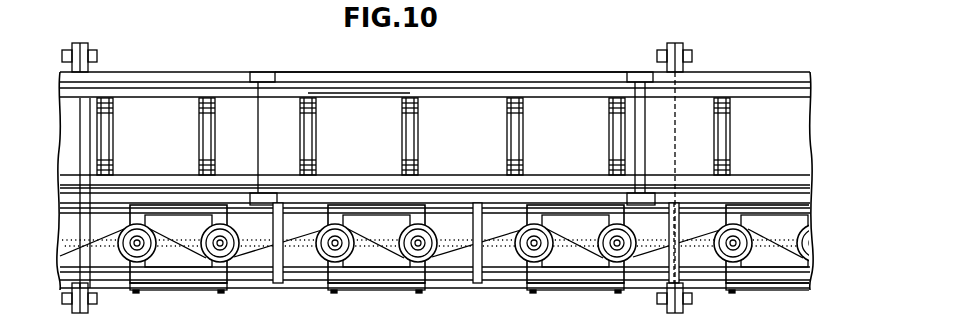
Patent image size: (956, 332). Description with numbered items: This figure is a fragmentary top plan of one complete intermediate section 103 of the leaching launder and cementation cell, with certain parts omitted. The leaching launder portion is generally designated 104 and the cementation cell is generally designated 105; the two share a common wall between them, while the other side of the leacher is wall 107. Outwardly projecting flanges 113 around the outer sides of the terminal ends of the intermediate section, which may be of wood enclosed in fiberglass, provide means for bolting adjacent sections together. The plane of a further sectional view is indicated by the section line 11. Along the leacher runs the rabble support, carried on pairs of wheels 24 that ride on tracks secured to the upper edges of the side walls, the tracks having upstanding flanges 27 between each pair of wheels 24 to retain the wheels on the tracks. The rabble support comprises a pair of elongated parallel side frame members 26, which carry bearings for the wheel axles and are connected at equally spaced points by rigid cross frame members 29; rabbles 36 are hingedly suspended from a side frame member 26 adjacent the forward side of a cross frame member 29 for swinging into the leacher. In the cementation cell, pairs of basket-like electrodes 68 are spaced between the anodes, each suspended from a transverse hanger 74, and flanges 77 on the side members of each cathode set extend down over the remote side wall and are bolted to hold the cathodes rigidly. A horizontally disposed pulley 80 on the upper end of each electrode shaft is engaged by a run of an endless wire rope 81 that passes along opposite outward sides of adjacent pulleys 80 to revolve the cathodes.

The section line 11- 11 is at (170, 68).
The wheels 24 is at (259, 66).
The side frame members 26 is at (348, 92).
The upstanding flanges 27 is at (398, 76).
The cross frame members 29 is at (418, 145).
The rabbles 36 is at (506, 146).
The electrodes 68 is at (403, 221).
The transverse hanger 74 is at (616, 270).
The flanges 77 is at (398, 287).
The pulley 80 is at (404, 251).
The endless wire rope 81 is at (494, 255).
The intermediate sections 103 is at (285, 283).
The leaching launder portion 104 is at (489, 106).
The cementation cell 105 is at (509, 220).
The wall 107 is at (305, 71).
The outwardly projecting flanges 113 is at (84, 44).